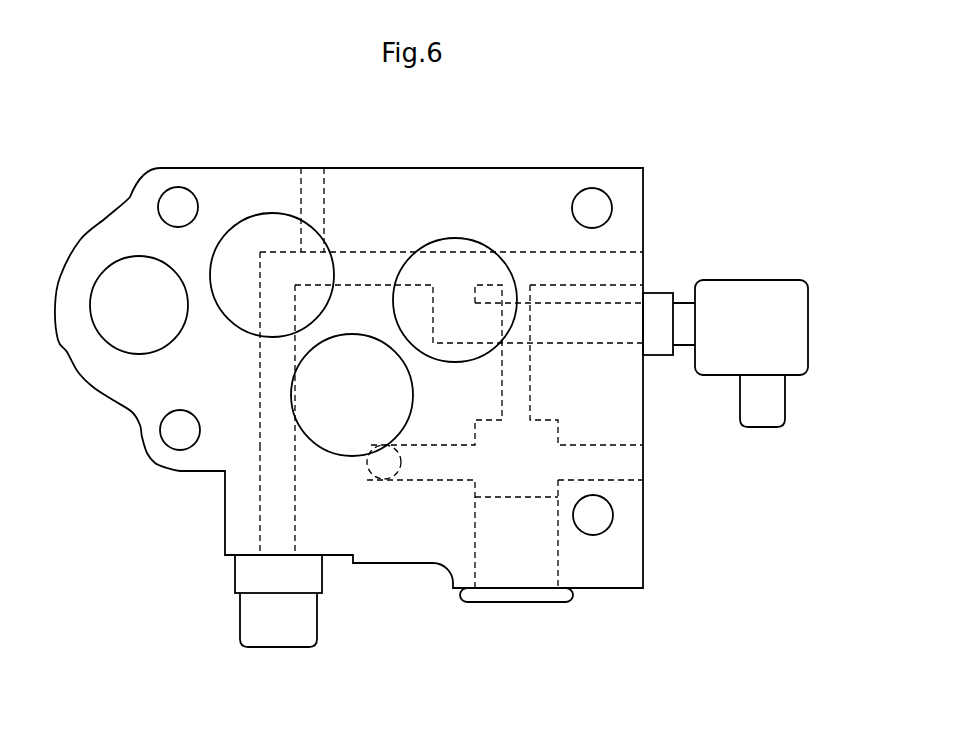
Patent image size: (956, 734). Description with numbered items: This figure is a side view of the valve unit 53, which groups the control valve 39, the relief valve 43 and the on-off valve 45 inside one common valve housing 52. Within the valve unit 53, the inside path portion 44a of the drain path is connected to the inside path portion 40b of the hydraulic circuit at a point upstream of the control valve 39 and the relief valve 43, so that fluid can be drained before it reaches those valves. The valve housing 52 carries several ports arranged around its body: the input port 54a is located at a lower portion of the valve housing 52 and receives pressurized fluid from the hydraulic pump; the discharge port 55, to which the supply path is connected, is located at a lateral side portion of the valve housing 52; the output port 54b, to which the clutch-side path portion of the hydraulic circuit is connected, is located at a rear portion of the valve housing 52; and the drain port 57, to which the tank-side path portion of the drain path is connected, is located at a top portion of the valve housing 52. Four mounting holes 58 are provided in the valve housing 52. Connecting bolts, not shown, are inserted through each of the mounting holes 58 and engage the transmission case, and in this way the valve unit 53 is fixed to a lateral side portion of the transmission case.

The valve unit 53 is at (143, 132).
The valve housing 52 is at (442, 183).
The mounting holes 58 is at (170, 204).
The on-off valve 45 is at (238, 218).
The control valve 39 is at (476, 242).
The discharge port 55 is at (367, 452).
The inside path portion 44a is at (301, 193).
The drain port 57 is at (318, 168).
The inside path portion 40b is at (260, 507).
The relief valve 43 is at (560, 555).
The input port 54a is at (263, 648).
The output port 54b is at (770, 280).